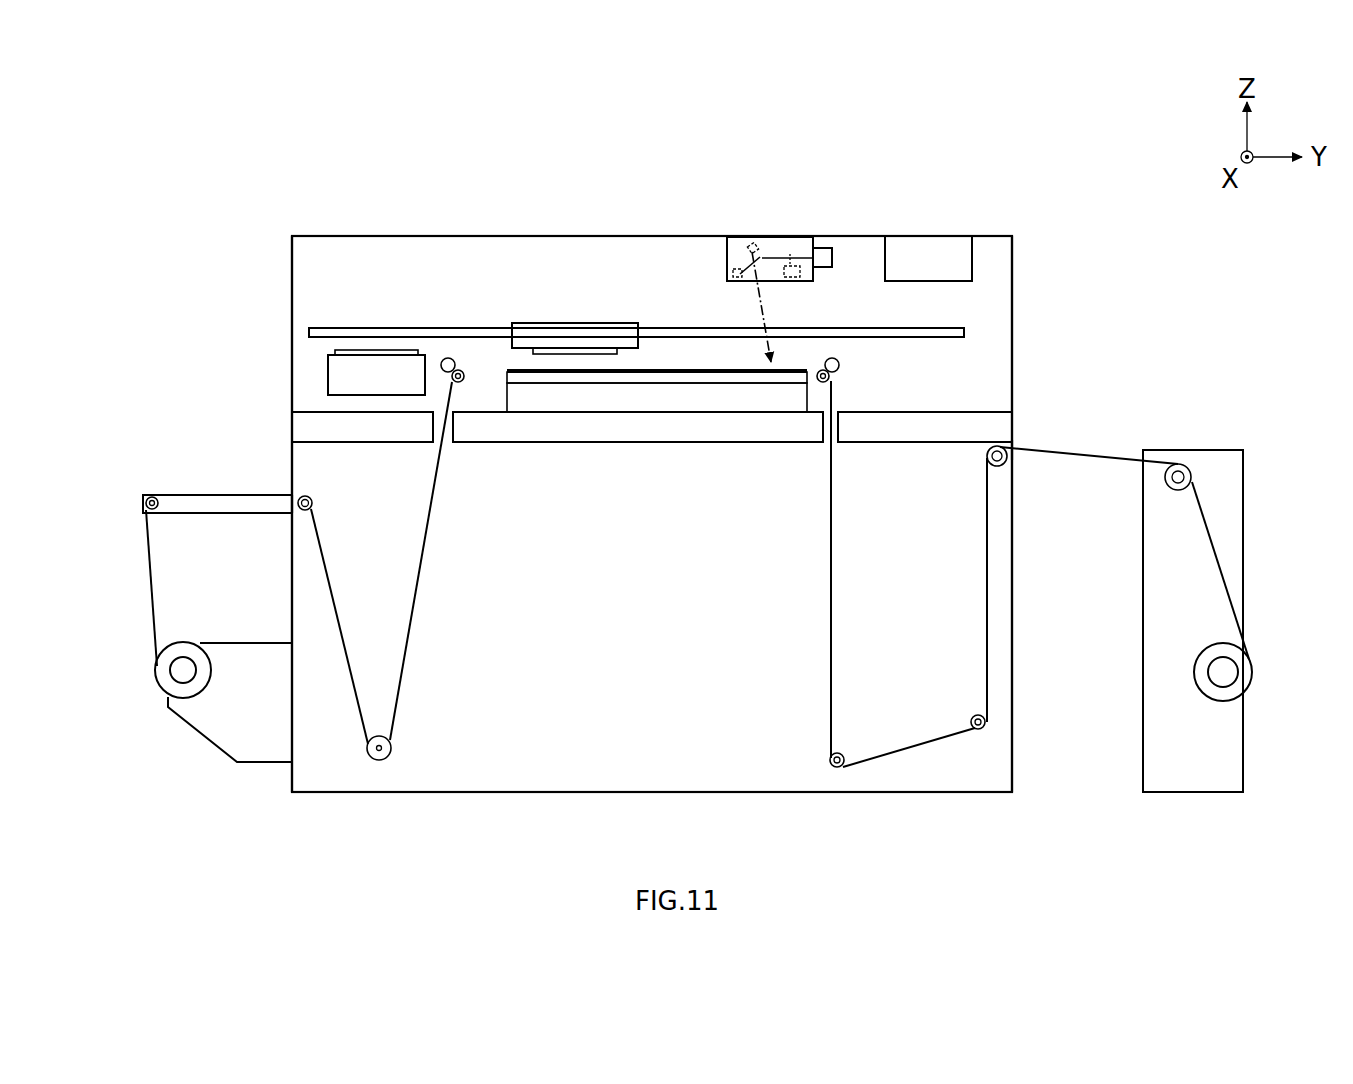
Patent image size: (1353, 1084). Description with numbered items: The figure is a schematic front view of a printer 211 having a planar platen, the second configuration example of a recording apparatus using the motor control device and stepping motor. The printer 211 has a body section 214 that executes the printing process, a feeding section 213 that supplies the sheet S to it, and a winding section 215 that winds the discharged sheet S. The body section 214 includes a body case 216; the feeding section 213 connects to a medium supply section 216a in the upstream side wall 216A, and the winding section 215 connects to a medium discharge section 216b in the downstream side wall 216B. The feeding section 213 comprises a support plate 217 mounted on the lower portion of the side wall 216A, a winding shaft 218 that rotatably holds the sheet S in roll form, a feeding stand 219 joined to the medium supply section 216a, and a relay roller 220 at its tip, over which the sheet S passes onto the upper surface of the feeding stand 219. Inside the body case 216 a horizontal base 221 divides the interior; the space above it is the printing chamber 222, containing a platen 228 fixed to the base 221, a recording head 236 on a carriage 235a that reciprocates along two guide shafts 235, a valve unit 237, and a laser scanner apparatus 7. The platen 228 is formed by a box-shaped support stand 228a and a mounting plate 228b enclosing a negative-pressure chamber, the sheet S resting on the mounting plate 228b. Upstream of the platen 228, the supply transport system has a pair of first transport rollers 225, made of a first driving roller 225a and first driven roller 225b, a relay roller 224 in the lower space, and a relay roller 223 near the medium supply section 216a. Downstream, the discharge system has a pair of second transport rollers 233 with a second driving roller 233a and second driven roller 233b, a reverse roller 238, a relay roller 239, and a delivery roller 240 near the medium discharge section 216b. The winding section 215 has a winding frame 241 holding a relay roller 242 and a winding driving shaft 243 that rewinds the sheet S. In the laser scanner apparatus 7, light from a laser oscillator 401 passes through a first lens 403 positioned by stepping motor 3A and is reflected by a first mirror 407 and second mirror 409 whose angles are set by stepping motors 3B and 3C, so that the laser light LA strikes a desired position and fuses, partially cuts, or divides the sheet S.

The printer 211 is at (1068, 180).
The feeding section 213 is at (185, 485).
The body section 214 is at (632, 203).
The winding section 215 is at (1177, 430).
The body case 216 is at (548, 236).
The side wall 216A is at (292, 281).
The side wall 216B is at (1012, 300).
The medium supply section 216a is at (283, 487).
The medium discharge section 216b is at (1018, 440).
The support plate 217 is at (195, 732).
The winding shaft 218 is at (160, 678).
The feeding stand 219 is at (215, 505).
The relay roller 220 is at (145, 498).
The base 221 is at (665, 432).
The printing chamber 222 is at (343, 272).
The relay roller 223 is at (313, 503).
The relay roller 224 is at (391, 748).
The pair of first transport rollers 225 is at (449, 256).
The first driving roller 225a is at (460, 370).
The first driven roller 225b is at (446, 358).
The platen 228 is at (650, 457).
The support stand 228a is at (530, 383).
The mounting plate 228b is at (493, 498).
The pair of second transport rollers 233 is at (905, 378).
The second driving roller 233a is at (827, 383).
The second driven roller 233b is at (840, 365).
The guide shafts 235 is at (672, 328).
The carriage 235a is at (526, 328).
The recording head 236 is at (597, 355).
The valve unit 237 is at (948, 252).
The reverse roller 238 is at (838, 767).
The relay roller 239 is at (982, 729).
The delivery roller 240 is at (1008, 458).
The winding frame 241 is at (1233, 450).
The relay roller 242 is at (1165, 478).
The winding driving shaft 243 is at (1200, 672).
The laser scanner apparatus 7 is at (784, 226).
The stepping motor 3A is at (790, 266).
The stepping motor 3B is at (750, 248).
The stepping motor 3C is at (735, 270).
The laser oscillator 401 is at (822, 248).
The first lens 403 is at (803, 268).
The first mirror 407 is at (748, 278).
The second mirror 409 is at (735, 280).
The laser light LA is at (757, 305).
The sheet S is at (150, 565).